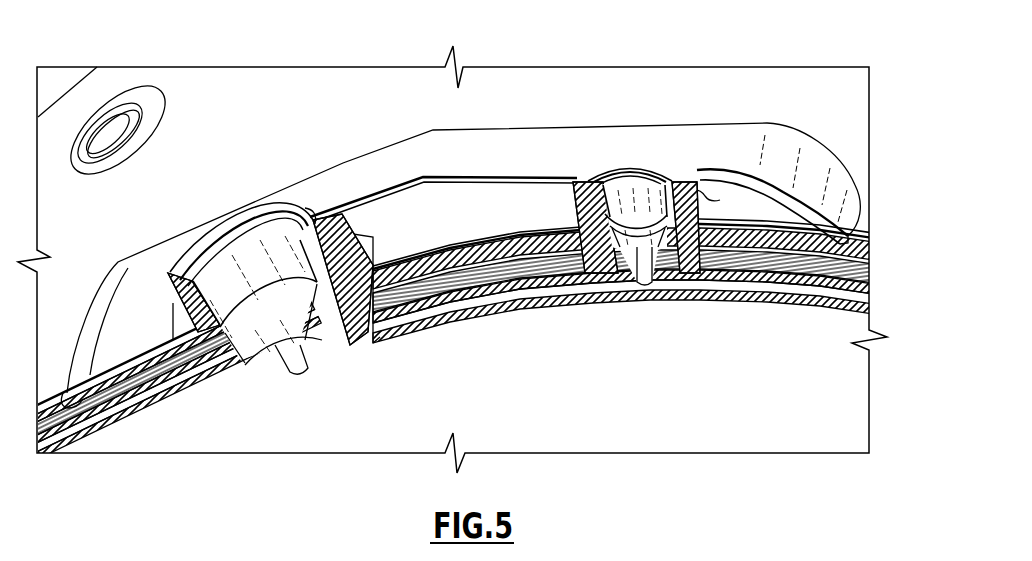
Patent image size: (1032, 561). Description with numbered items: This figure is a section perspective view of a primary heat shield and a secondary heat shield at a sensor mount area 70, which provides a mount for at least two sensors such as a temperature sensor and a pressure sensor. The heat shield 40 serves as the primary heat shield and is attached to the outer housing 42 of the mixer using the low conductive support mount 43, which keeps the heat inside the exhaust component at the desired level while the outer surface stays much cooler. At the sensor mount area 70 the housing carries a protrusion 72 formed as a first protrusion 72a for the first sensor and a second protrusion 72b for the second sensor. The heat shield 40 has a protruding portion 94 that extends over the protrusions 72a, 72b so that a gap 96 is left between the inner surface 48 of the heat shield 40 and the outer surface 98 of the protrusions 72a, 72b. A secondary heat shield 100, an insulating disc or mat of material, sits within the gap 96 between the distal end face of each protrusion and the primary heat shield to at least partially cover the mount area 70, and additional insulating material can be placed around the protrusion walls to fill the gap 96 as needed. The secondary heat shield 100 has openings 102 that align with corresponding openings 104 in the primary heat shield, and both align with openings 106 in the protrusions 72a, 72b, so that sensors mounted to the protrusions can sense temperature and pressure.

The heat shield 40 is at (500, 92).
The outer housing 42 is at (96, 374).
The low conductive support mount 43 is at (880, 262).
The inner surface 48 is at (483, 180).
The sensor mount area 70 is at (806, 85).
The protrusion 72 is at (319, 194).
The first protrusion 72a is at (337, 230).
The second protrusion 72b is at (573, 181).
The protruding portion 94 is at (133, 263).
The gap 96 is at (108, 335).
The outer surface 98 is at (173, 303).
The secondary heat shield 100 is at (260, 213).
The openings 102 is at (217, 233).
The openings 104 is at (243, 212).
The openings 106 is at (300, 270).